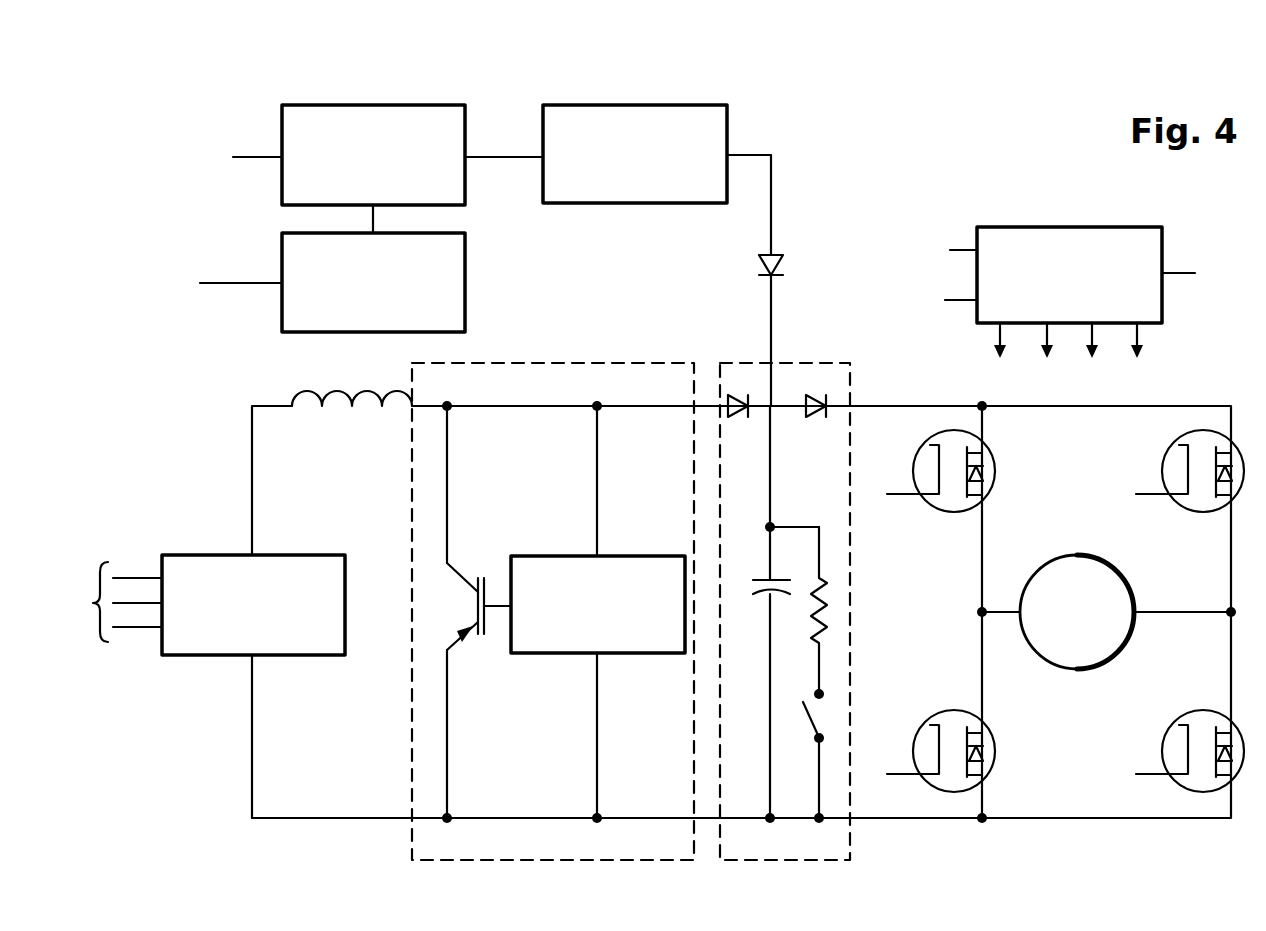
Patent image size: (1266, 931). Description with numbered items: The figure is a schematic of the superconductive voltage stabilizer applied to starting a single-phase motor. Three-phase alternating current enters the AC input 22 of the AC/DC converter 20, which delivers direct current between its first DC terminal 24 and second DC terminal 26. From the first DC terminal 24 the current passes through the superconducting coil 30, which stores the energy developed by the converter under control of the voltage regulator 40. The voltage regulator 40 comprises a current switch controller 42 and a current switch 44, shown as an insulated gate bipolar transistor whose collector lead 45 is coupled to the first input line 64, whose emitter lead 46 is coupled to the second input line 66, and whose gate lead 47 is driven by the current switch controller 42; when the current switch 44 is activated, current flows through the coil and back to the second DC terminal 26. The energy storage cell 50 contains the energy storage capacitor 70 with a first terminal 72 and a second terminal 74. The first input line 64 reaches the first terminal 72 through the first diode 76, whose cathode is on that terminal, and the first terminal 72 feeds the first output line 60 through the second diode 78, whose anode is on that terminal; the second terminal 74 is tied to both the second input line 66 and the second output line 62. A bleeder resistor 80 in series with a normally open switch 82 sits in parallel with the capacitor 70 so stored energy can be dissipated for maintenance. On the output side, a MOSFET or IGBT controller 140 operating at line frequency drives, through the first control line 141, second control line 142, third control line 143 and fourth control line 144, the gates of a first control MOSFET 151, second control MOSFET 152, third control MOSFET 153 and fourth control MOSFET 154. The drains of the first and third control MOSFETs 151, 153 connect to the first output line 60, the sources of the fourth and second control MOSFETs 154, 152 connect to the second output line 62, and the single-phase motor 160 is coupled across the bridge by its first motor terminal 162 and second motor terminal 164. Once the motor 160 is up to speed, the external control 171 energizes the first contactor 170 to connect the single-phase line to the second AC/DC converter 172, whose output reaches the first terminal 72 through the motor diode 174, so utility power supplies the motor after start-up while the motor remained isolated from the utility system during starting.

The AC/DC converter 20 is at (225, 645).
The AC input 22 is at (135, 578).
The first DC terminal 24 is at (252, 553).
The second DC terminal 26 is at (256, 656).
The superconducting coil 30 is at (298, 388).
The voltage regulator 40 is at (523, 362).
The current switch controller 42 is at (665, 560).
The current switch 44 is at (468, 636).
The collector lead 45 is at (447, 478).
The emitter lead 46 is at (447, 690).
The gate lead 47 is at (497, 603).
The energy storage cell 50 is at (790, 361).
The first output line 60 is at (890, 406).
The second output line 62 is at (890, 818).
The first input line 64 is at (710, 405).
The second input line 66 is at (705, 825).
The energy storage capacitor 70 is at (762, 596).
The first terminal 72 is at (770, 485).
The second terminal 74 is at (768, 712).
The first diode 76 is at (738, 418).
The second diode 78 is at (826, 395).
The resistor 80 is at (825, 628).
The switch 82 is at (812, 722).
The MOSFET or IGBT controller 140 is at (1108, 227).
The first control line 141 is at (1000, 332).
The second control line 142 is at (1047, 333).
The third control line 143 is at (1092, 335).
The fourth control line 144 is at (1140, 335).
The first control MOSFET 151 is at (995, 470).
The second control MOSFET 152 is at (1165, 733).
The third control MOSFET 153 is at (1167, 447).
The fourth control MOSFET 154 is at (995, 751).
The single-phase motor 160 is at (1097, 575).
The first motor terminal 162 is at (1003, 612).
The second motor terminal 164 is at (1176, 612).
The first contactor 170 is at (285, 128).
The external control 171 is at (465, 283).
The second AC/DC converter 172 is at (727, 128).
The motor diode 174 is at (777, 257).